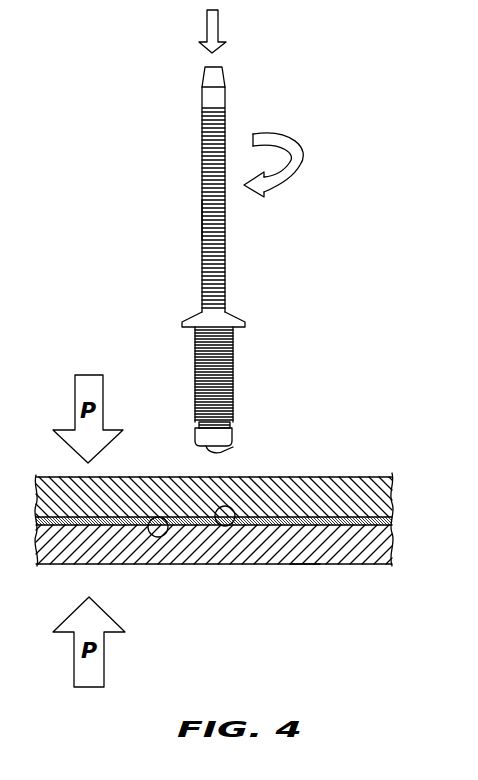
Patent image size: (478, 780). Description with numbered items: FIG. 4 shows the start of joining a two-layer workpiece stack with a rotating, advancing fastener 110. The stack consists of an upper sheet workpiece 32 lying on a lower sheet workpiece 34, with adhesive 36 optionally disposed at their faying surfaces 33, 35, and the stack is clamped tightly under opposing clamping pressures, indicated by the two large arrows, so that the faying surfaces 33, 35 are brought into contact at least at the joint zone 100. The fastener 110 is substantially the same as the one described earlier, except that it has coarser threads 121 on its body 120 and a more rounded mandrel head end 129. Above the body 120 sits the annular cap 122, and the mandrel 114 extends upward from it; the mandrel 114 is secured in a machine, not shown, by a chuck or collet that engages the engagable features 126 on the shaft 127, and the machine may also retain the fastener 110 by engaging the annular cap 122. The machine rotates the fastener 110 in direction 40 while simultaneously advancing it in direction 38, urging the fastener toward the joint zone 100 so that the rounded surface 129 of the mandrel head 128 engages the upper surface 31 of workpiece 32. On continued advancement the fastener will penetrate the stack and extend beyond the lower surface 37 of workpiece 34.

The surface of workpiece 31 is at (52, 477).
The sheet workpiece 32 is at (362, 497).
The faying surface 33 is at (152, 517).
The sheet workpiece 34 is at (347, 548).
The faying surface 35 is at (232, 527).
The adhesive 36 is at (392, 520).
The surface of workpiece 37 is at (302, 564).
The advancing direction 38 is at (218, 32).
The rotation direction 40 is at (303, 160).
The joint zone 100 is at (212, 478).
The fastener 110 is at (217, 174).
The mandrel 114 is at (202, 90).
The body 120 is at (269, 352).
The threads 121 is at (234, 372).
The annular cap 122 is at (238, 316).
The engagable features 126 is at (202, 235).
The shaft 127 is at (202, 188).
The mandrel head 128 is at (233, 430).
The mandrel head end surface 129 is at (233, 447).